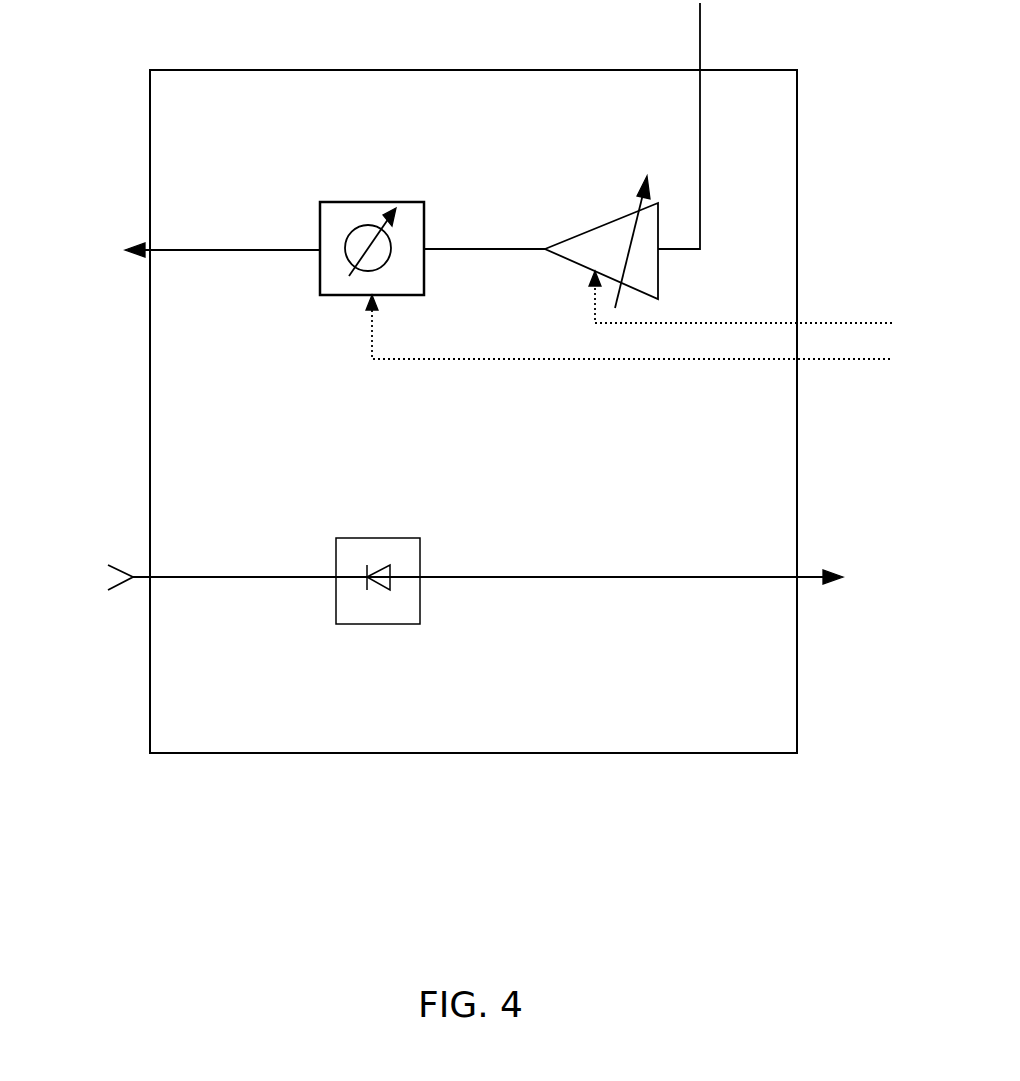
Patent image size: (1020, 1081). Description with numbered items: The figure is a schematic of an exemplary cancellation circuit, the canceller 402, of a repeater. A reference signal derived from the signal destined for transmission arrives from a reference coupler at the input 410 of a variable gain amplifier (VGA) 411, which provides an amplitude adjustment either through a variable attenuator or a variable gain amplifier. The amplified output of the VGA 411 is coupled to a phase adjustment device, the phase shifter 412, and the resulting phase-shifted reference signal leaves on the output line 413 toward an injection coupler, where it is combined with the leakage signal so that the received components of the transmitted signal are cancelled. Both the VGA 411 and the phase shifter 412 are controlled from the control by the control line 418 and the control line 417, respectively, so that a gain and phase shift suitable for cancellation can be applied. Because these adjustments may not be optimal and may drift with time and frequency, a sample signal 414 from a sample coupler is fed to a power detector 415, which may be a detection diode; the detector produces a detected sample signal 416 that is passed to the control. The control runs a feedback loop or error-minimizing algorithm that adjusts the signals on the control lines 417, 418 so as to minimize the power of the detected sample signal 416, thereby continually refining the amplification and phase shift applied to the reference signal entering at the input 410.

The canceller 402 is at (755, 753).
The input 410 is at (702, 87).
The variable gain amplifier (VGA) 411 is at (577, 232).
The phase shifter 412 is at (410, 202).
The output line 413 is at (213, 250).
The sample signal 414 is at (220, 577).
The power detector 415 is at (412, 624).
The detected sample signal 416 is at (597, 577).
The control line 417 is at (490, 359).
The control line 418 is at (682, 323).